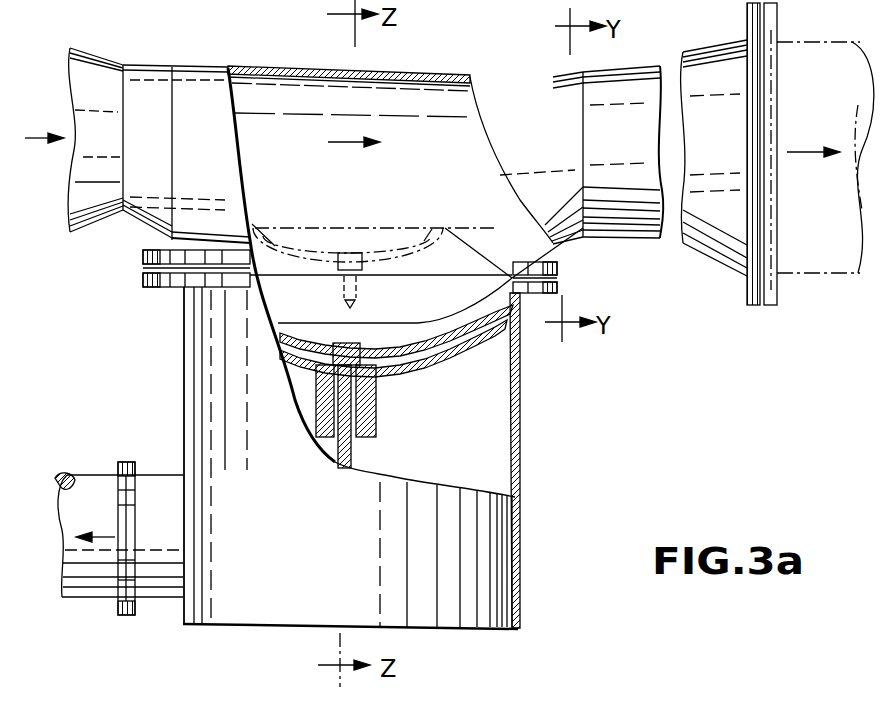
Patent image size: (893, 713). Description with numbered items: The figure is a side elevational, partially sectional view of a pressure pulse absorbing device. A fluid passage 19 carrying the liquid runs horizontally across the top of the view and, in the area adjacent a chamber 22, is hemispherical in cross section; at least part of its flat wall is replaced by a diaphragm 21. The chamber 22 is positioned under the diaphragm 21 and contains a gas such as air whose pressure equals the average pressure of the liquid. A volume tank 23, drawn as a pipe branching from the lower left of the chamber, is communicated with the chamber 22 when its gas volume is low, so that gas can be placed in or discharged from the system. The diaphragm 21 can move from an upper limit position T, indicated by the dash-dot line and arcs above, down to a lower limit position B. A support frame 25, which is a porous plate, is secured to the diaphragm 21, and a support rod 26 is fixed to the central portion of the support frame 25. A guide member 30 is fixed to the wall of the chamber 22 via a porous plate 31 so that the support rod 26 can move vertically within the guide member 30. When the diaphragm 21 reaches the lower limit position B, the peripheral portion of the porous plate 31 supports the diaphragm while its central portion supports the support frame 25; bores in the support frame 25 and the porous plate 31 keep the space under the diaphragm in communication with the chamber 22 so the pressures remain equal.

The fluid passage 19 is at (418, 72).
The diaphragm 21 is at (472, 242).
The chamber 22 is at (522, 422).
The volume tank 23 is at (48, 545).
The support frame 25 is at (309, 334).
The support rod 26 is at (353, 455).
The guide member 30 is at (374, 419).
The porous plate 31 is at (440, 362).
The upper limit position T is at (378, 226).
The lower limit position B is at (384, 318).